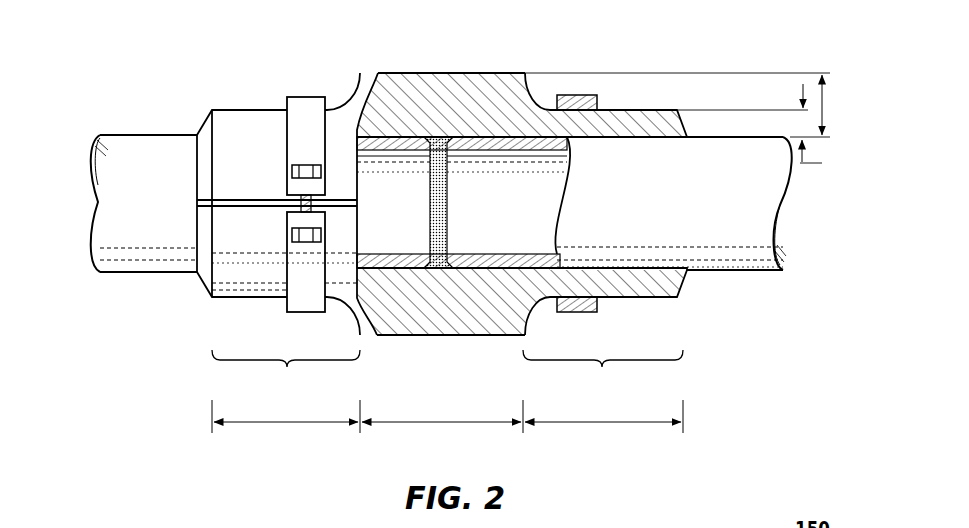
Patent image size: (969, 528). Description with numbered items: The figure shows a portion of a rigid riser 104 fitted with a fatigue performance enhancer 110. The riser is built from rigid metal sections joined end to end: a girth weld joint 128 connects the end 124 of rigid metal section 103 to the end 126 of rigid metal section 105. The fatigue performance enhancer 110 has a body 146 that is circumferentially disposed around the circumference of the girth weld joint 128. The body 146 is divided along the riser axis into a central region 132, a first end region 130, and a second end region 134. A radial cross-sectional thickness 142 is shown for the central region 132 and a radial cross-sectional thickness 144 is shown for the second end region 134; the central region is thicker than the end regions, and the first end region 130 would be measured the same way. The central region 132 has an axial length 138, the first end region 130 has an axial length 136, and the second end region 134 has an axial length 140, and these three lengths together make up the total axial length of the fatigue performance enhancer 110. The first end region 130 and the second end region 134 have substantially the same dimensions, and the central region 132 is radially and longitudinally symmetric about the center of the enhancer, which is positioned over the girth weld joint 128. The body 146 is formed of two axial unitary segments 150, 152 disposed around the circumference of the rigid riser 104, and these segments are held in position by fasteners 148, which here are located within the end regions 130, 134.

The rigid metal section 103 is at (112, 231).
The rigid riser 104 is at (748, 278).
The rigid metal section 105 is at (756, 196).
The fatigue performance enhancer 110 is at (490, 56).
The end of rigid metal section 124 is at (430, 190).
The end of rigid metal section 126 is at (448, 190).
The girth weld joint 128 is at (446, 232).
The first end region 130 is at (286, 375).
The central region 132 is at (523, 350).
The second end region 134 is at (603, 375).
The axial length 136 is at (262, 425).
The axial length 138 is at (415, 425).
The axial length 140 is at (579, 425).
The radial cross-sectional thickness 142 is at (852, 90).
The radial cross-sectional thickness 144 is at (810, 163).
The body 146 is at (419, 88).
The fasteners 148 is at (306, 100).
The axial unitary segment 150 is at (246, 125).
The axial unitary segment 152 is at (246, 282).